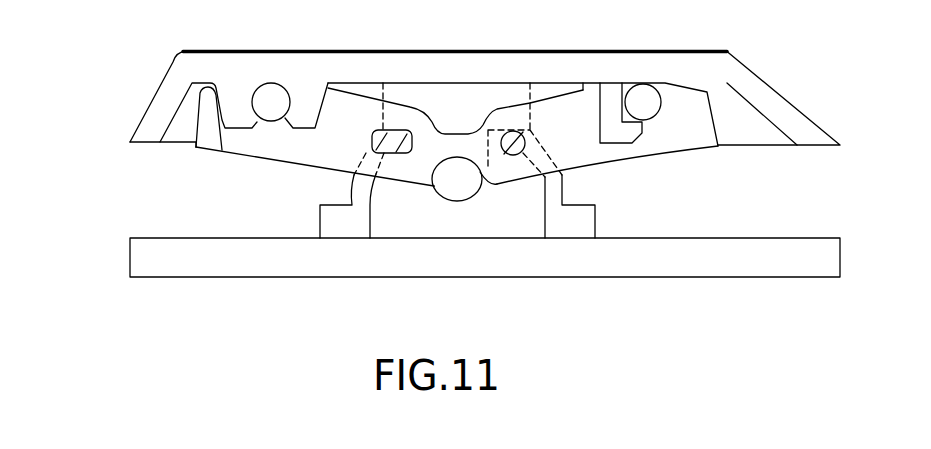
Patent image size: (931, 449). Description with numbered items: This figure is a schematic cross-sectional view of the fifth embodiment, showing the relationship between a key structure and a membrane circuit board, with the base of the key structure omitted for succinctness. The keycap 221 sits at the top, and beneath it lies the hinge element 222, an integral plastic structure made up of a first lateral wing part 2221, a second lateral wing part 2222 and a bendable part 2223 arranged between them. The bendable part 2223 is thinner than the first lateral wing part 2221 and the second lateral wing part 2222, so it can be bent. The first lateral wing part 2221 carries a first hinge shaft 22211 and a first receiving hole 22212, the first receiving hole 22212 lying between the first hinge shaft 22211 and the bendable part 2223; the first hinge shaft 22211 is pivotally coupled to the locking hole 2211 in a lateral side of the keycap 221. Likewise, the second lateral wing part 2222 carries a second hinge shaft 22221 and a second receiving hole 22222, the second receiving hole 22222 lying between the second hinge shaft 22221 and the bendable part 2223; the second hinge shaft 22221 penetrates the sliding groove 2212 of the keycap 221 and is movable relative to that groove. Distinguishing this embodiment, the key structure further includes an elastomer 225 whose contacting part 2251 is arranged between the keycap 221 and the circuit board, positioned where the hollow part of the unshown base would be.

The keycap 221 is at (338, 44).
The locking hole 2211 is at (270, 100).
The first hinge shaft 22211 is at (258, 90).
The first lateral wing part 2221 is at (272, 138).
The elastomer 225 is at (458, 94).
The sliding groove 2212 is at (622, 83).
The second hinge shaft 22221 is at (645, 100).
The hinge element 222 is at (706, 168).
The second lateral wing part 2222 is at (643, 162).
The bendable part 2223 is at (455, 148).
The contacting part 2251 is at (450, 183).
The first receiving hole 22212 is at (372, 140).
The second receiving hole 22222 is at (523, 147).